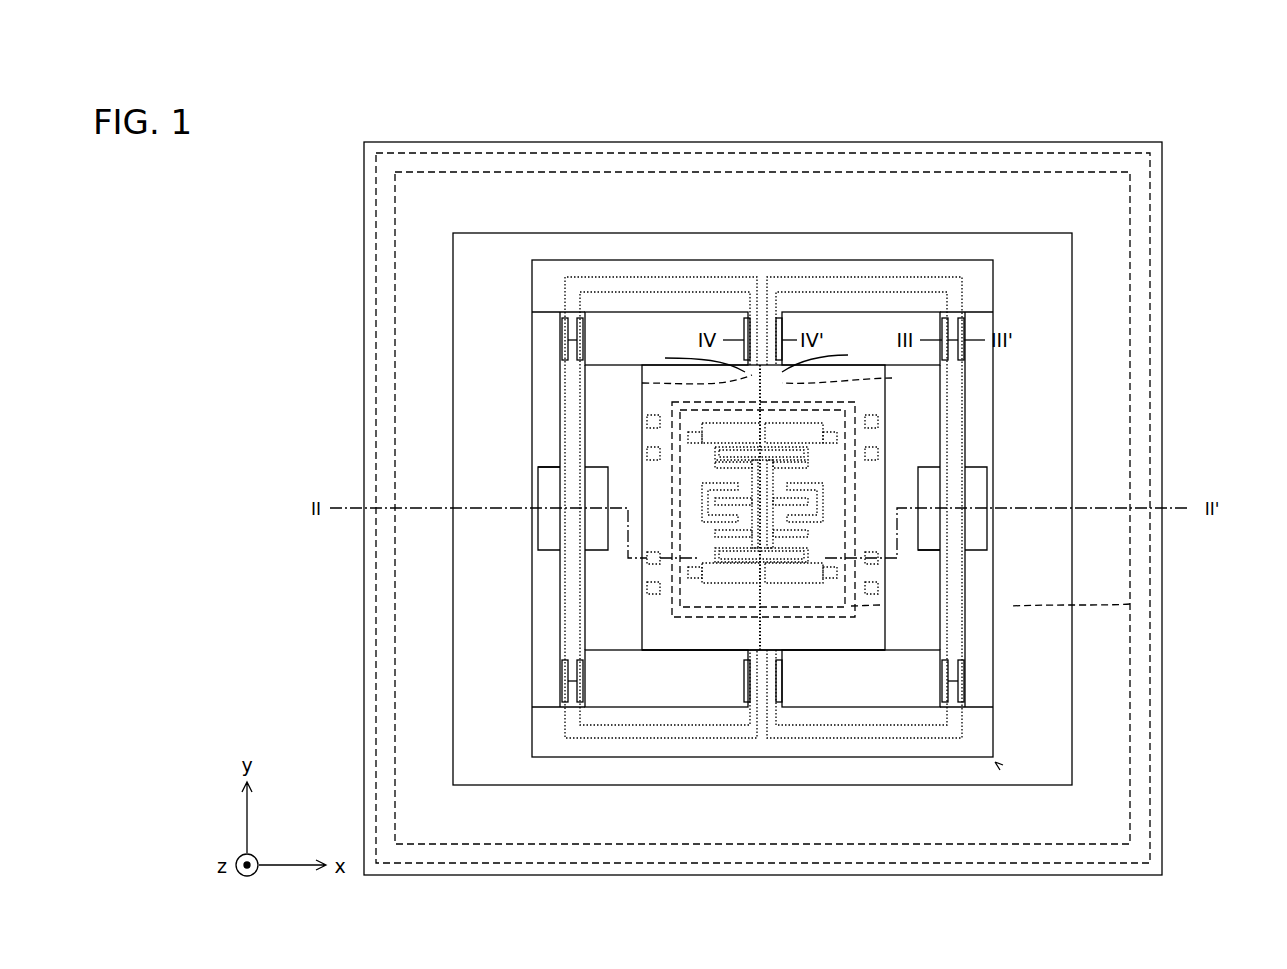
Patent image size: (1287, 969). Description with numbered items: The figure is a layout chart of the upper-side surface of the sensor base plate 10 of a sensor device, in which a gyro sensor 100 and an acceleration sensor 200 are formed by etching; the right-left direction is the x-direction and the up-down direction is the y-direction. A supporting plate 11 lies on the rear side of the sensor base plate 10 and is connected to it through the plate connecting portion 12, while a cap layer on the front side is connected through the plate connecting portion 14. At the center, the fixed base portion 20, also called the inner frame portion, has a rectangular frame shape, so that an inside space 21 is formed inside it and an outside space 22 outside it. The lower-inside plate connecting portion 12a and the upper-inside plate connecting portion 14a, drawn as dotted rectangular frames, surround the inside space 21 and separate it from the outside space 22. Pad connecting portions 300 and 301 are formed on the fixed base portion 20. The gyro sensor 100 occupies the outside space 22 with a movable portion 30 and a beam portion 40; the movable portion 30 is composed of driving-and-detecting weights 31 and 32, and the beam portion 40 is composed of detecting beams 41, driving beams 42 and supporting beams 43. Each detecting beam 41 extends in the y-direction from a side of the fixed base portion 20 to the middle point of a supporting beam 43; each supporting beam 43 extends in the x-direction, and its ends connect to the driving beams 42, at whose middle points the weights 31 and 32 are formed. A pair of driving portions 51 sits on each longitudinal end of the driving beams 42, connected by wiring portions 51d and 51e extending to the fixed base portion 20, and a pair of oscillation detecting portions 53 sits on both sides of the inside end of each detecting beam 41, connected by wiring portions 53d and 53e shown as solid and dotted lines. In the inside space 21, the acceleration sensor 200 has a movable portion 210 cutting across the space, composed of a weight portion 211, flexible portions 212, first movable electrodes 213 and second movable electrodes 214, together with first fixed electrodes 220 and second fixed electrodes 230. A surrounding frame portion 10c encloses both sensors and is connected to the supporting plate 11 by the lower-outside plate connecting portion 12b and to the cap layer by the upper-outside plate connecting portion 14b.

The sensor base plate 10 is at (1173, 187).
The surrounding frame portion 10c is at (1150, 217).
The supporting plate 11 is at (1050, 244).
The plate connecting portion 12 is at (666, 607).
The plate connecting portion 14 is at (1154, 645).
The lower-inside plate connecting portion 12a is at (880, 605).
The upper-inside plate connecting portion 14a is at (865, 605).
The lower-outside plate connecting portion 12b is at (1152, 606).
The upper-outside plate connecting portion 14b is at (1070, 605).
The fixed base portion 20 is at (688, 365).
The inside space 21 is at (722, 600).
The outside space 22 is at (1058, 718).
The movable portion 30 is at (992, 475).
The driving-and-detecting weight 31 is at (538, 470).
The driving-and-detecting weight 32 is at (988, 540).
The beam portion 40 is at (968, 440).
The detecting beam 41 is at (784, 333).
The driving beam 42 is at (560, 377).
The supporting beam 43 is at (903, 260).
The driving portion 51 is at (562, 320).
The wiring portion 51d is at (788, 300).
The wiring portion 51e is at (822, 300).
The oscillation detecting portion 53 is at (745, 318).
The wiring portion 53d is at (665, 358).
The wiring portion 53e is at (645, 383).
The gyro sensor 100 is at (996, 762).
The acceleration sensor 200 is at (703, 427).
The movable portion 210 is at (792, 540).
The weight portion 211 is at (774, 466).
The flexible portion 212 is at (718, 452).
The first movable electrode 213 is at (716, 485).
The second movable electrode 214 is at (804, 554).
The first fixed electrode 220 is at (705, 500).
The second fixed electrode 230 is at (815, 494).
The pad connecting portion 300 is at (845, 422).
The pad connecting portion 301 is at (857, 405).